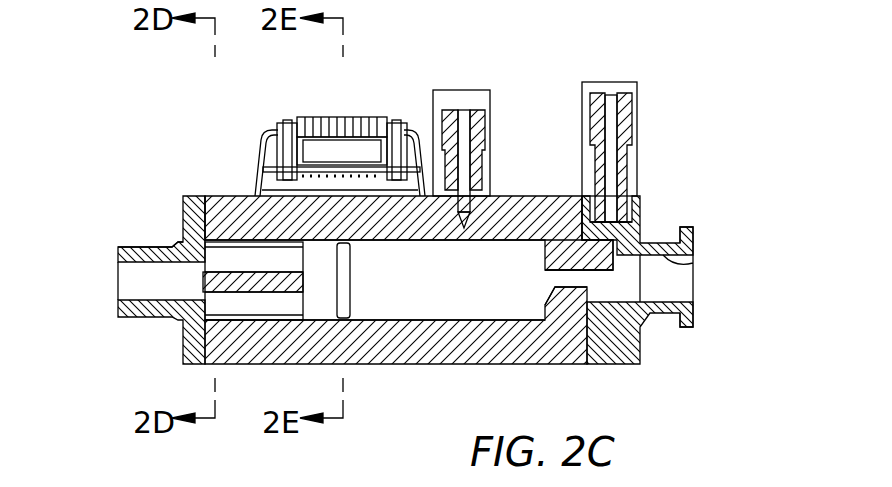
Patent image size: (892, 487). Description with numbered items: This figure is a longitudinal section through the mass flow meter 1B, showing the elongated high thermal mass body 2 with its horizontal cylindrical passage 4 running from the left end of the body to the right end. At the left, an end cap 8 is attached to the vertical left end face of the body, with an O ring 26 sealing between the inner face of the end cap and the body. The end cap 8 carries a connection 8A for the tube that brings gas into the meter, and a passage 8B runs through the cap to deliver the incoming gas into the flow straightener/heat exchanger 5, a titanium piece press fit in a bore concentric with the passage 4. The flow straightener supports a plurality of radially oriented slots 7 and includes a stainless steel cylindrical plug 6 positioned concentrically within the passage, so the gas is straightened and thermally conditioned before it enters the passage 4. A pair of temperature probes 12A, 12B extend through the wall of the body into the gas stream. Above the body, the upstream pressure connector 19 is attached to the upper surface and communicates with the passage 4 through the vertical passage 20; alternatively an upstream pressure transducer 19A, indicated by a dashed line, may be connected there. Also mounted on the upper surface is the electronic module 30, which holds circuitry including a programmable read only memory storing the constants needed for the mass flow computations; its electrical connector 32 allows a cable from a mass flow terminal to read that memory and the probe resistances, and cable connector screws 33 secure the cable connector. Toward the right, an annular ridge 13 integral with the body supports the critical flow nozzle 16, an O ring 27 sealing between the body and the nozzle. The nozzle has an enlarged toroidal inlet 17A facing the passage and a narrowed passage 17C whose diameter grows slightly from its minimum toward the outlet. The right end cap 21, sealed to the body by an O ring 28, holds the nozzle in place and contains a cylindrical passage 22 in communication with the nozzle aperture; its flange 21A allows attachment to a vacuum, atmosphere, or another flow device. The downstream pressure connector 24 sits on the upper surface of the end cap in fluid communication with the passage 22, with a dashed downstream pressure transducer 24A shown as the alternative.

The mass flow meter 1B is at (387, 231).
The high thermal mass body 2 is at (525, 196).
The cylindrical passage 4 is at (479, 322).
The flow straightener/heat exchanger 5 is at (270, 310).
The cylindrical plug 6 is at (205, 282).
The radially oriented slots 7 is at (297, 257).
The end cap 8 is at (192, 196).
The connection 8A is at (138, 247).
The passage 8B is at (120, 292).
The temperature probe 12A is at (397, 280).
The temperature probe 12B is at (352, 285).
The annular ridge 13 is at (545, 240).
The critical flow nozzle 16 is at (545, 292).
The enlarged toroidal inlet 17A is at (545, 268).
The narrowed passage 17C is at (605, 290).
The upstream pressure connector 19 is at (487, 135).
The upstream pressure transducer 19A is at (490, 100).
The vertical passage 20 is at (466, 228).
The right end cap 21 is at (600, 364).
The flange 21A is at (690, 327).
The cylindrical passage 22 is at (693, 262).
The downstream pressure connector 24 is at (626, 130).
The downstream pressure transducer 24A is at (640, 90).
The O ring 26 is at (214, 196).
The O ring 27 is at (575, 250).
The O ring 28 is at (566, 235).
The electronic module 30 is at (257, 160).
The electrical connector 32 is at (325, 117).
The cable connector screws 33 is at (283, 122).